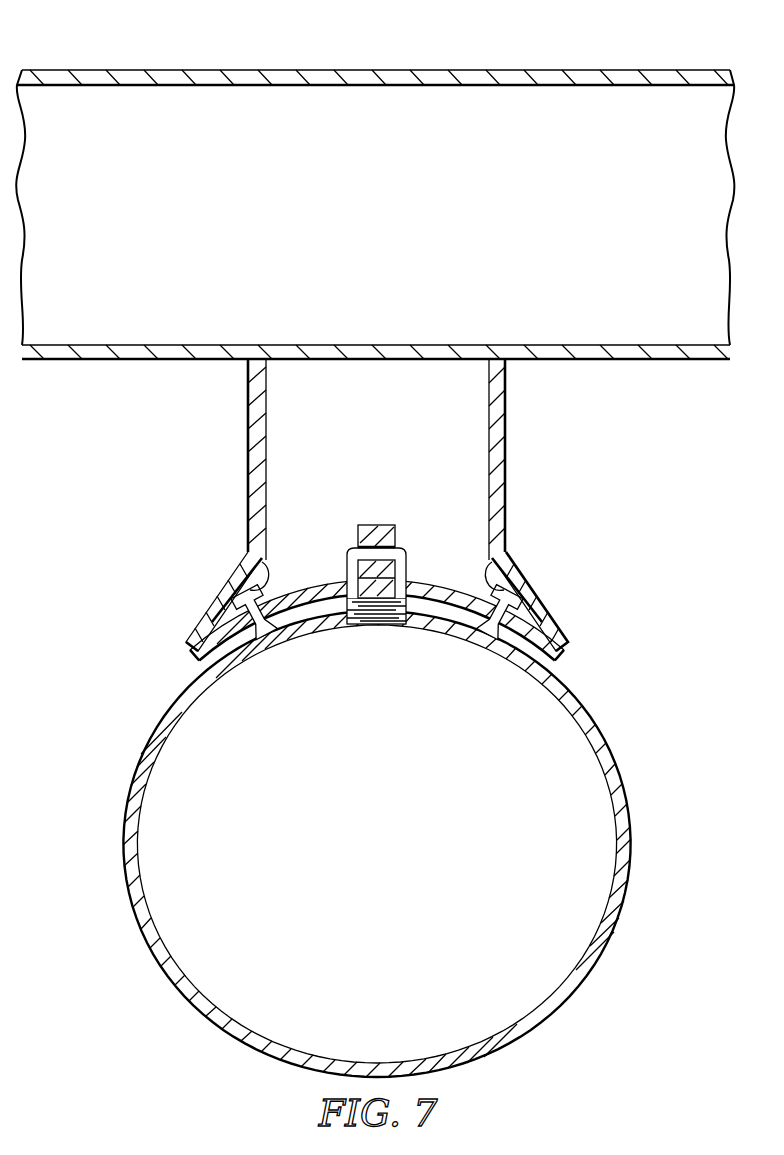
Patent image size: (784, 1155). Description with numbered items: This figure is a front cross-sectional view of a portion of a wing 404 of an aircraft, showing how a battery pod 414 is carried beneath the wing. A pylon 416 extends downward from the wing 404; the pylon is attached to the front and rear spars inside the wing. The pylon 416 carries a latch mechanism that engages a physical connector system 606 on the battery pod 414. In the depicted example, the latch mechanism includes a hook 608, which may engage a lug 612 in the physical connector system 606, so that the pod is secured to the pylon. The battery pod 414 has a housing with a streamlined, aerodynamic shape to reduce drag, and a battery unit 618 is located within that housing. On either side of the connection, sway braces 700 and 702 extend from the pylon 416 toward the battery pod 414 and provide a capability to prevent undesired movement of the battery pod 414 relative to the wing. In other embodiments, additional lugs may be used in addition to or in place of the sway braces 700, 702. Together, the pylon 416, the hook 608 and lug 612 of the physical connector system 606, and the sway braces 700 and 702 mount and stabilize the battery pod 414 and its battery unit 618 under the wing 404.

The wing 404 is at (434, 70).
The pylon 416 is at (506, 467).
The battery pod 414 is at (114, 887).
The battery unit 618 is at (359, 846).
The physical connector system 606 is at (325, 537).
The sway brace 702 is at (241, 563).
The sway brace 700 is at (513, 556).
The lug 612 is at (410, 553).
The hook 608 is at (380, 525).